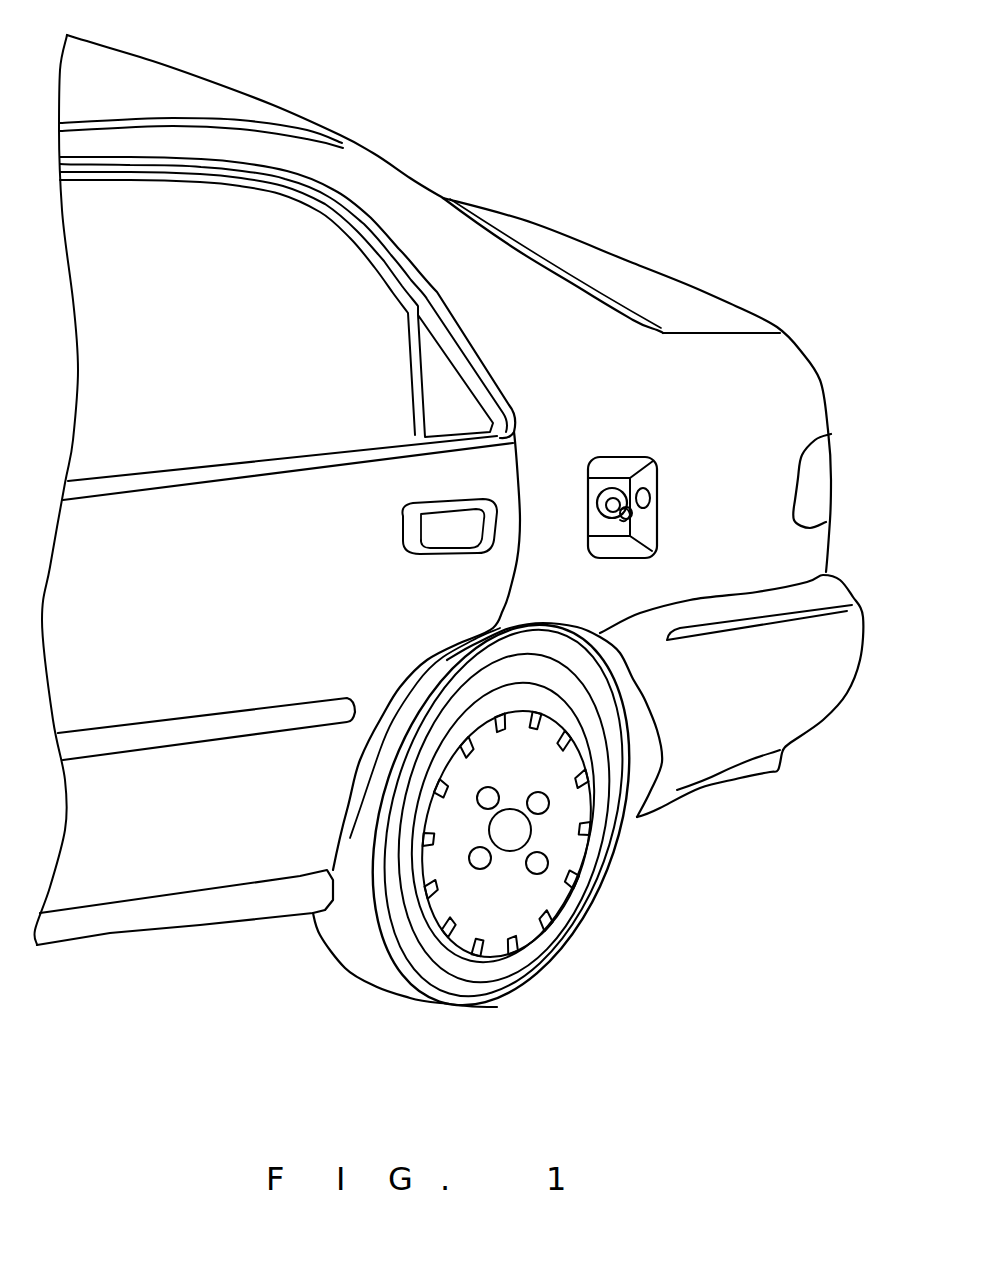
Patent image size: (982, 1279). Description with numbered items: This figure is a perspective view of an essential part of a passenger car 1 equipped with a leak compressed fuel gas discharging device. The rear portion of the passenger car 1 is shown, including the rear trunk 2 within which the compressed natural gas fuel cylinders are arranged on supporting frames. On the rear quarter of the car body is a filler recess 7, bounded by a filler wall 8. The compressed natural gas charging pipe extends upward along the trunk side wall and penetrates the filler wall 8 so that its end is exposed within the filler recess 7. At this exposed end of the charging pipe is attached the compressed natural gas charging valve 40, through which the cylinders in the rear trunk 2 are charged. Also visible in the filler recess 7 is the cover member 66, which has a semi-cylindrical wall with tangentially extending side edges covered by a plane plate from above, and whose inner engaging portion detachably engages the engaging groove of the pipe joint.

The passenger car 1 is at (371, 110).
The rear trunk 2 is at (700, 318).
The filler recess 7 is at (622, 487).
The filler wall 8 is at (648, 477).
The compressed natural gas charging valve 40 is at (588, 520).
The cover member 66 is at (660, 520).